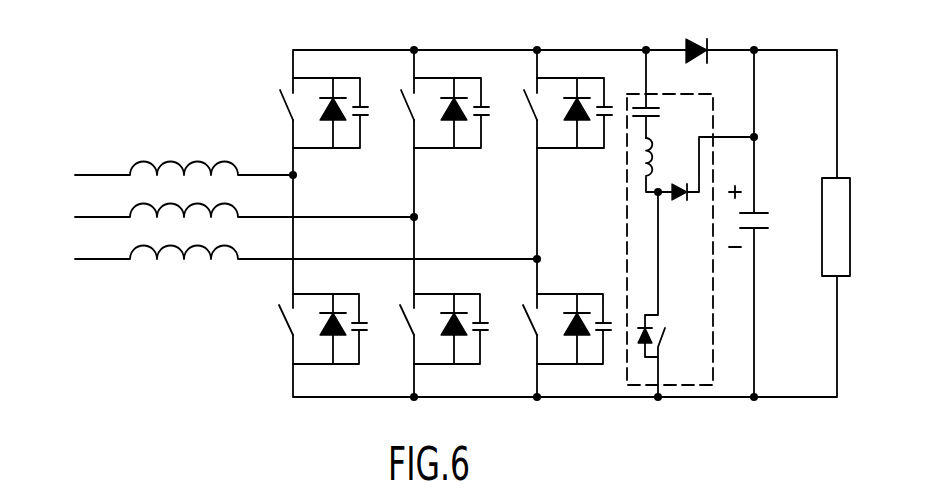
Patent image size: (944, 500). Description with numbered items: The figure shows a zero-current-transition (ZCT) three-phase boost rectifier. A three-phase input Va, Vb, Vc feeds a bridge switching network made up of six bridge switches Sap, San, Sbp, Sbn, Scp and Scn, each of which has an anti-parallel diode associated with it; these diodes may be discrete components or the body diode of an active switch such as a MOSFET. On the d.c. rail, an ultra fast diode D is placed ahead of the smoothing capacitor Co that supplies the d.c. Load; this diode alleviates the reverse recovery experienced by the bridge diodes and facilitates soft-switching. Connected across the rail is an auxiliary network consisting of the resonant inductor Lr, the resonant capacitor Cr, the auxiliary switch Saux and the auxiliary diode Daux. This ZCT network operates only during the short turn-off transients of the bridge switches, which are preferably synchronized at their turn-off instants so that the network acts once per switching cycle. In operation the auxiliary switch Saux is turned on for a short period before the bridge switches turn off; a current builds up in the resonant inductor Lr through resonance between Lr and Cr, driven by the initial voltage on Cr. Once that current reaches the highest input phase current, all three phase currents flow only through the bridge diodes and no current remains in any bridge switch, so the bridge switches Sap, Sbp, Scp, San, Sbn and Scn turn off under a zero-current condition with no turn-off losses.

The phase a input voltage Va is at (165, 173).
The phase b input voltage Vb is at (225, 215).
The phase c input voltage Vc is at (287, 257).
The bridge switch Sap is at (324, 130).
The bridge switch Sbp is at (445, 130).
The bridge switch Scp is at (568, 130).
The bridge switch San is at (323, 344).
The bridge switch Sbn is at (444, 344).
The bridge switch Scn is at (567, 344).
The ultra fast diode D is at (696, 40).
The resonant capacitor Cr is at (659, 94).
The resonant inductor Lr is at (661, 165).
The auxiliary diode Daux is at (709, 185).
The auxiliary switch Saux is at (673, 294).
The smoothing capacitor Co is at (758, 223).
The d.c. load Load is at (860, 227).